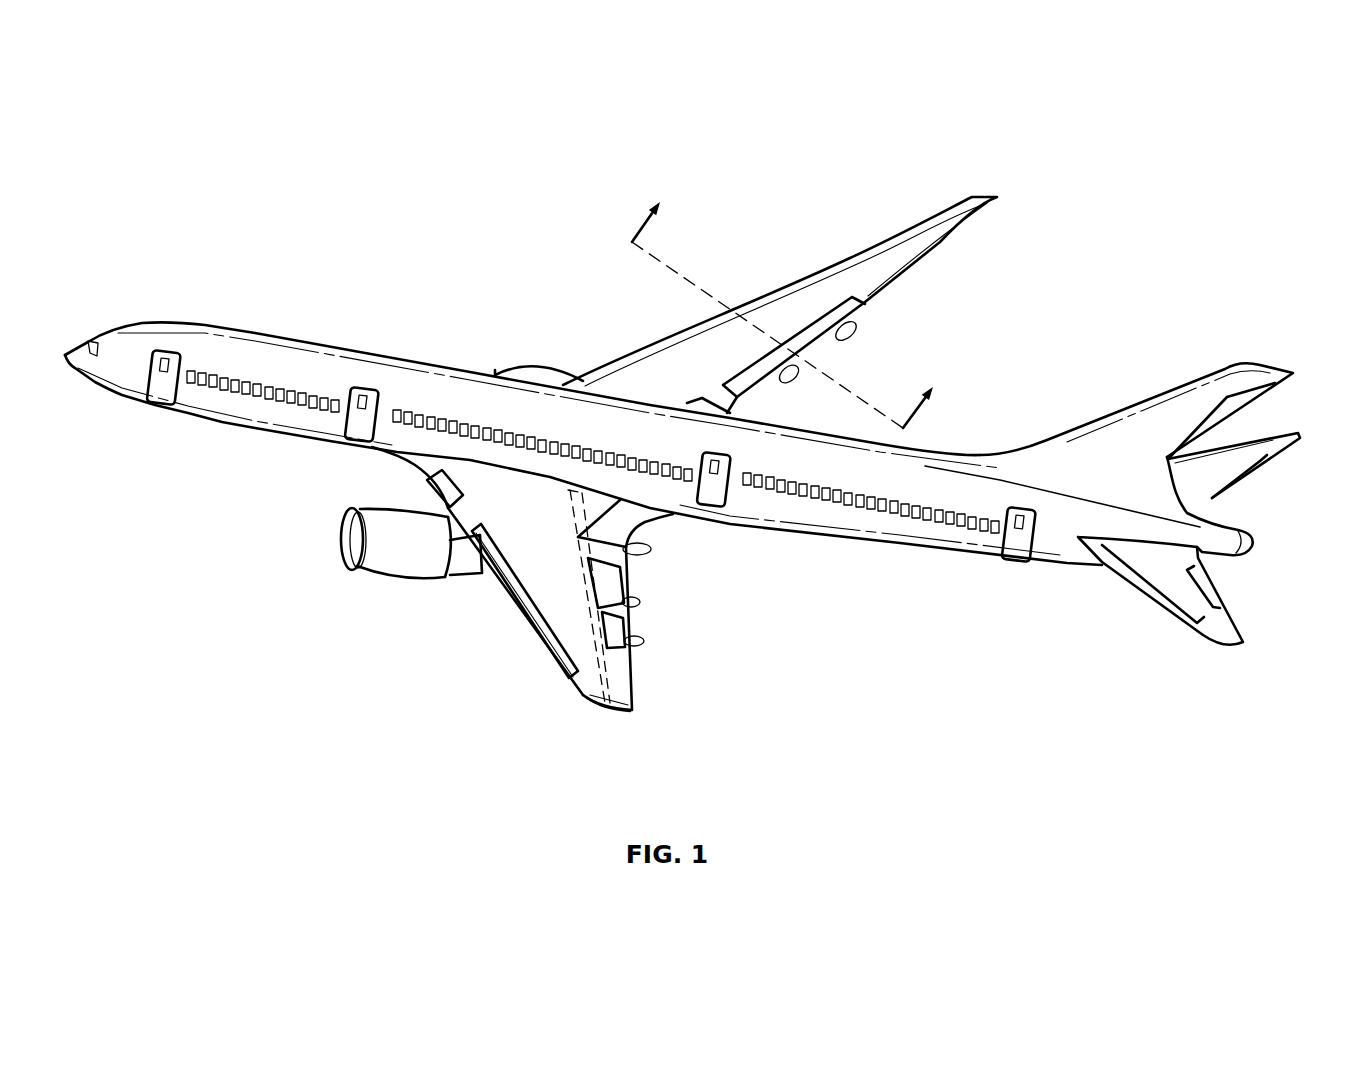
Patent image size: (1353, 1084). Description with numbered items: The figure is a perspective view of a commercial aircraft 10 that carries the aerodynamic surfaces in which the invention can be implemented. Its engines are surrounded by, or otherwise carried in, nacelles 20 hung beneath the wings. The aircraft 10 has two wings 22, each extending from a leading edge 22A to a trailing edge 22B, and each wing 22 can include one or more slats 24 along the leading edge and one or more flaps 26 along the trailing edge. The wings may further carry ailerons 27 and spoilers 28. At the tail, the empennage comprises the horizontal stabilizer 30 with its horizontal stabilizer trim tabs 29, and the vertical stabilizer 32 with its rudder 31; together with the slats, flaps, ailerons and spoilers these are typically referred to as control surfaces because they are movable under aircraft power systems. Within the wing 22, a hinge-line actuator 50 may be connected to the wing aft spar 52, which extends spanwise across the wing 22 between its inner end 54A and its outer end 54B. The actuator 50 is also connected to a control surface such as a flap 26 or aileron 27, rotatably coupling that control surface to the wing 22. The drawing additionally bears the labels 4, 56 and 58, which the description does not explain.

The section line 4- 4 is at (792, 300).
The commercial aircraft 10 is at (1232, 168).
The nacelles 20 is at (533, 372).
The wings 22 is at (790, 310).
The leading edge 22A is at (545, 668).
The trailing edge 22B is at (622, 713).
The slats 24 is at (532, 633).
The flaps 26 is at (818, 348).
The ailerons 27 is at (935, 265).
The spoilers 28 is at (877, 254).
The horizontal stabilizer trim tabs 29 is at (1203, 539).
The horizontal stabilizer 30 is at (1228, 634).
The rudder 31 is at (1240, 409).
The vertical stabilizer 32 is at (1265, 472).
The hinge-line actuator 50 is at (626, 610).
The wing aft spar 52 is at (578, 565).
The inner end 54A is at (503, 470).
The outer end 54B is at (624, 718).
The wing section 56 is at (596, 480).
The inboard flap 58 is at (627, 549).